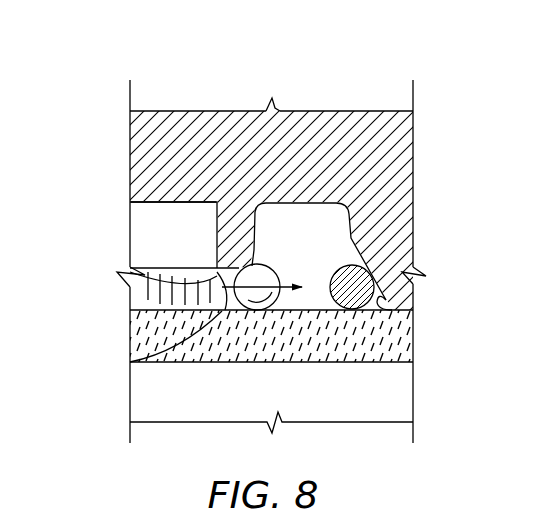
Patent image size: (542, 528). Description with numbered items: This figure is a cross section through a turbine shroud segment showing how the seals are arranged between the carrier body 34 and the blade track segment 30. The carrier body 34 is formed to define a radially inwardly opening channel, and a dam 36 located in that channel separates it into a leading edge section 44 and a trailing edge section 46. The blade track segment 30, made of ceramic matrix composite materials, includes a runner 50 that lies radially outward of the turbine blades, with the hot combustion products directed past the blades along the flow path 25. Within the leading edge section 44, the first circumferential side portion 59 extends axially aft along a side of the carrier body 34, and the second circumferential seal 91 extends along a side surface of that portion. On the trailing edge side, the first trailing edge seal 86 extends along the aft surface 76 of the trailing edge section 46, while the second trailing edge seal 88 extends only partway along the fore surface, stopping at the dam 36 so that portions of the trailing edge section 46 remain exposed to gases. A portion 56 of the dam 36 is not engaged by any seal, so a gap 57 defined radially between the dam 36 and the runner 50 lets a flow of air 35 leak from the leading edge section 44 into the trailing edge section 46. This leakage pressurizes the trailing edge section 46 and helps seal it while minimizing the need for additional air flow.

The flow path 25 is at (284, 399).
The blade track segment 30 is at (166, 386).
The carrier body 34 is at (375, 122).
The flow of air 35 is at (220, 309).
The dam 36 is at (207, 269).
The leading edge section 44 is at (139, 199).
The trailing edge section 46 is at (300, 193).
The runner 50 is at (220, 367).
The portion of the dam 56 is at (214, 290).
The gap 57 is at (130, 362).
The first circumferential side portion 59 is at (170, 227).
The aft surface 76 is at (392, 298).
The first trailing edge seal 86 is at (382, 264).
The second trailing edge seal 88 is at (263, 259).
The second circumferential seal 91 is at (188, 259).